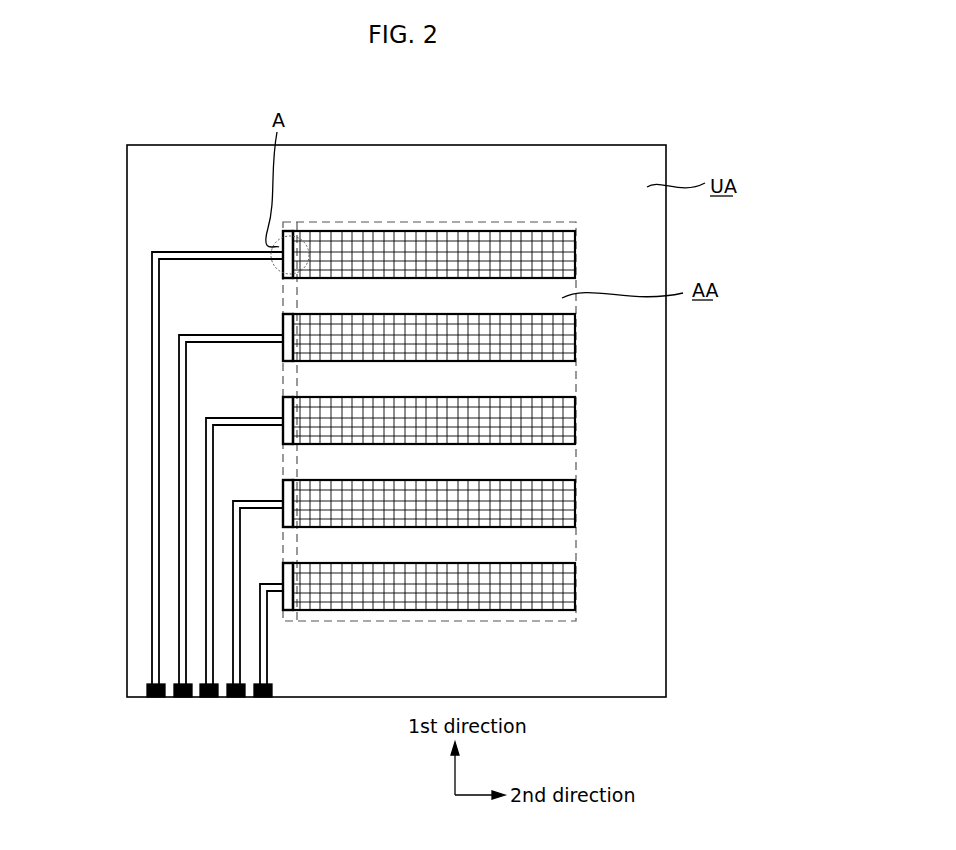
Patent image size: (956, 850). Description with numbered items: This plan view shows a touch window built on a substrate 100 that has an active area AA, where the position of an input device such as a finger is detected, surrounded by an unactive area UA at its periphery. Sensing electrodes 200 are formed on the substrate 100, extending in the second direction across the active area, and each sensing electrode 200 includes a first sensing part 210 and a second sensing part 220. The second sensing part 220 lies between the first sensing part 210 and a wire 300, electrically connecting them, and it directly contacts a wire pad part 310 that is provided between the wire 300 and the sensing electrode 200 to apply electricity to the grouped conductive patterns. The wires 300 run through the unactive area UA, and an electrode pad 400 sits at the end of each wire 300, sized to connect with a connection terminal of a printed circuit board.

The substrate 100 is at (247, 200).
The sensing electrode 200 is at (429, 348).
The first sensing part 210 is at (413, 247).
The second sensing part 220 is at (297, 252).
The wire 300 is at (152, 299).
The wire pad part 310 is at (287, 232).
The electrode pad 400 is at (147, 687).